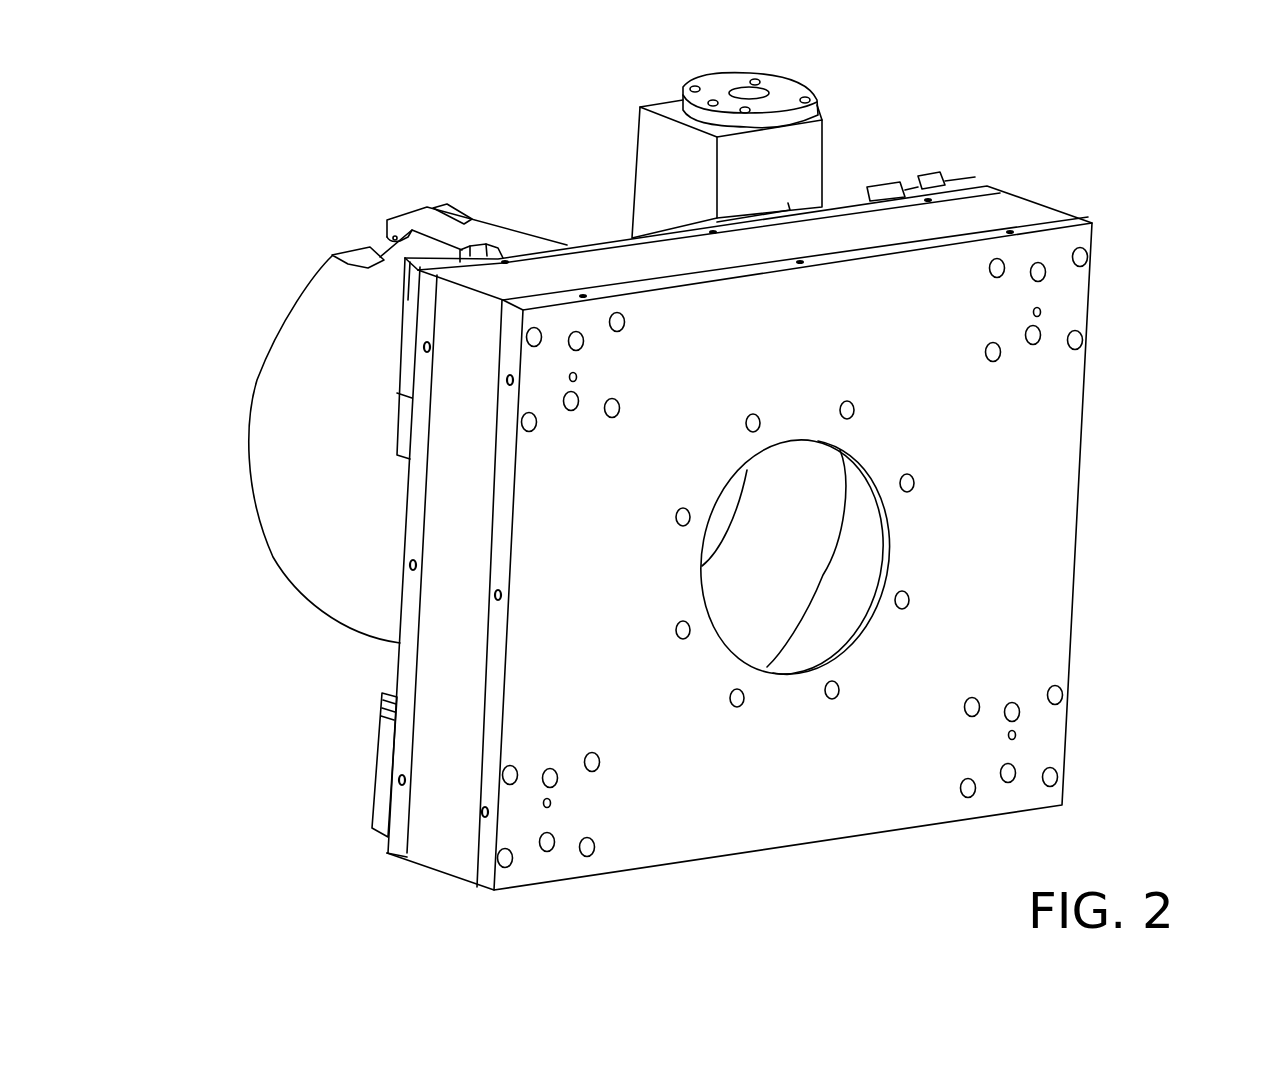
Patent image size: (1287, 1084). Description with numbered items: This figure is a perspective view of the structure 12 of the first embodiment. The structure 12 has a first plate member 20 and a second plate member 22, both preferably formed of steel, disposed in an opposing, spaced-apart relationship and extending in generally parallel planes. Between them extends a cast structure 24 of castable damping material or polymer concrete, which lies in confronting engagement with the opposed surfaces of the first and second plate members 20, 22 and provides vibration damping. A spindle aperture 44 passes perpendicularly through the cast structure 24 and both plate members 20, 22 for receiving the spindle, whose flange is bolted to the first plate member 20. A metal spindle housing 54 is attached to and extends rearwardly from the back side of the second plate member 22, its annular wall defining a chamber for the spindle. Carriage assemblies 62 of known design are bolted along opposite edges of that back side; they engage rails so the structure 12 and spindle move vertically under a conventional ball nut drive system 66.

The structure 12 is at (1130, 367).
The first plate member 20 is at (1010, 515).
The second plate member 22 is at (405, 683).
The cast structure 24 is at (450, 622).
The spindle aperture 44 is at (888, 578).
The spindle housing 54 is at (288, 487).
The carriage assemblies 62 is at (408, 343).
The ball nut drive system 66 is at (778, 163).